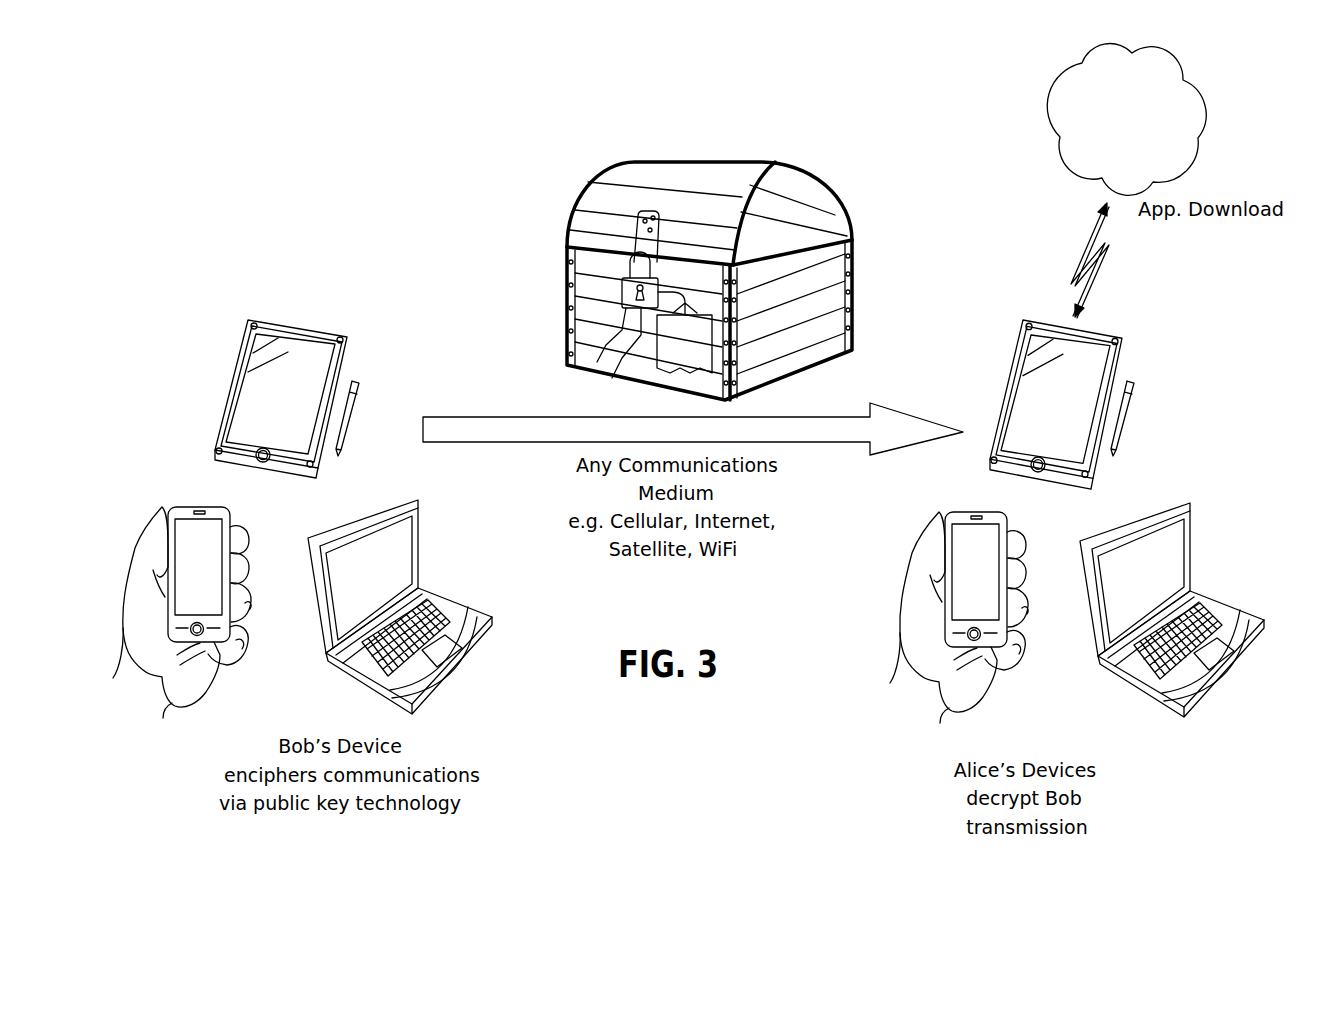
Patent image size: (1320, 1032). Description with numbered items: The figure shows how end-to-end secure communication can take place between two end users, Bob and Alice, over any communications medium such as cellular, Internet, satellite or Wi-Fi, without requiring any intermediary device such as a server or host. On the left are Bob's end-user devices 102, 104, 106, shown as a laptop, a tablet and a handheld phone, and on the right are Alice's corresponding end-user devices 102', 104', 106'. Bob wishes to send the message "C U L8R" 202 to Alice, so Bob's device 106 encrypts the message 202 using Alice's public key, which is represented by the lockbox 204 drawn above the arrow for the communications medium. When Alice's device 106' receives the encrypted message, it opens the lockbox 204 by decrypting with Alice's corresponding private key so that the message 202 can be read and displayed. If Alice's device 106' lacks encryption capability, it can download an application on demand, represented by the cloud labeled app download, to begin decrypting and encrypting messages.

The end-user device 102 is at (400, 607).
The end-user device 102' is at (1172, 610).
The end-user device 104 is at (316, 399).
The end-user device 104' is at (1094, 404).
The end-user device 106 is at (182, 585).
The end-user device 106' is at (957, 599).
The message 202 is at (612, 358).
The lockbox 204 is at (802, 197).